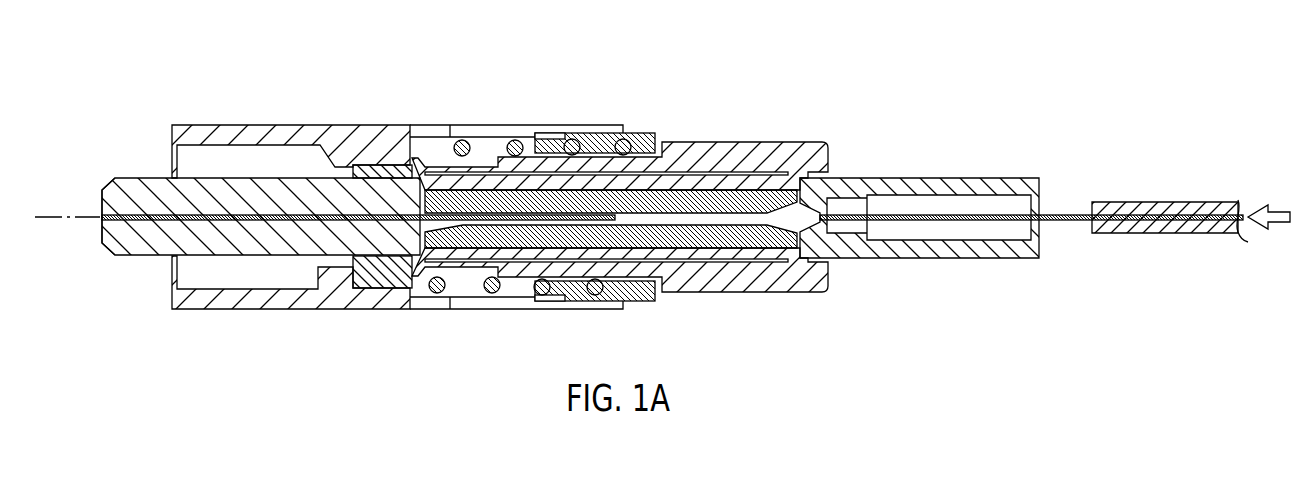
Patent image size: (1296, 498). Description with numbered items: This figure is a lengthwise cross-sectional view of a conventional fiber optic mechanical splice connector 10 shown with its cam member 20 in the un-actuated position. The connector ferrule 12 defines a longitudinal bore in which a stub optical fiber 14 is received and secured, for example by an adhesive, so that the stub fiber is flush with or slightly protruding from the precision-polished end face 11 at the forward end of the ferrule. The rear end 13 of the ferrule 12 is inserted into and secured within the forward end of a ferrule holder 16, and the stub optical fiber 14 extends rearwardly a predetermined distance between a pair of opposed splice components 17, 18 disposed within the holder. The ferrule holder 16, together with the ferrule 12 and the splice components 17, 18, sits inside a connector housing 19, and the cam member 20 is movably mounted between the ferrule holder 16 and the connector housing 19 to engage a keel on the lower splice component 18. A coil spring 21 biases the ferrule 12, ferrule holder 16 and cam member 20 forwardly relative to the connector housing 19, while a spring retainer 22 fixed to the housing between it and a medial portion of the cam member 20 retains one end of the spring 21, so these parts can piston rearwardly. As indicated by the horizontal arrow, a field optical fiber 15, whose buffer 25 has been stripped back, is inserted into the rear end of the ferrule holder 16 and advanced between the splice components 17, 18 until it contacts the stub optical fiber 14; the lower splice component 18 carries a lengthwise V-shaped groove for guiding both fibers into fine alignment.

The mechanical splice connector 10 is at (596, 78).
The end face 11 is at (98, 234).
The connector ferrule 12 is at (128, 177).
The rear end 13 is at (402, 171).
The stub optical fiber 14 is at (145, 221).
The field optical fiber 15 is at (970, 222).
The ferrule holder 16 is at (914, 177).
The upper splice component 17 is at (712, 199).
The lower splice component 18 is at (692, 263).
The connector housing 19 is at (280, 310).
The cam member 20 is at (802, 141).
The coil spring 21 is at (483, 141).
The spring retainer 22 is at (643, 133).
The buffer 25 is at (1173, 202).